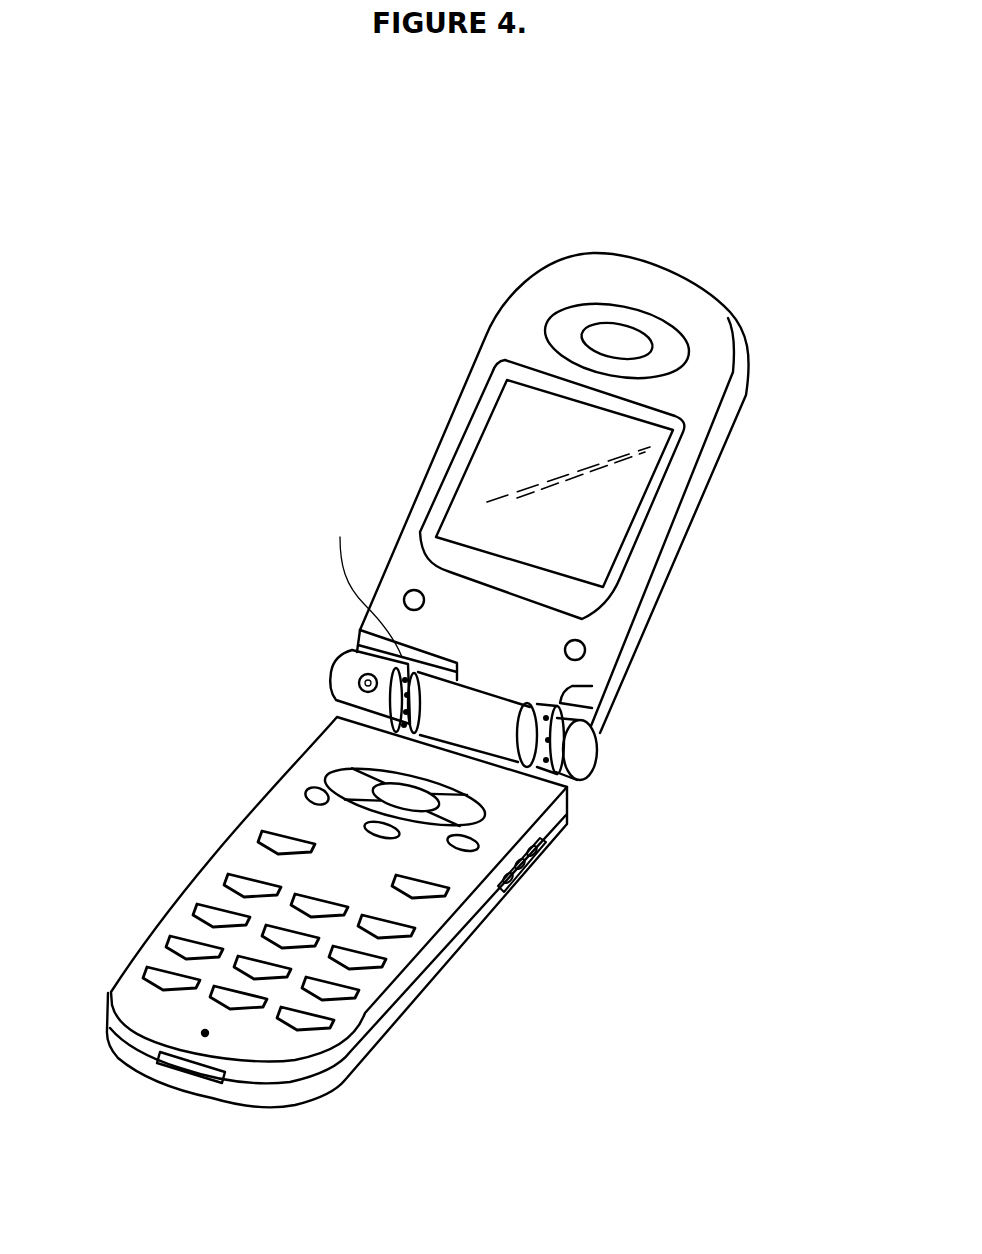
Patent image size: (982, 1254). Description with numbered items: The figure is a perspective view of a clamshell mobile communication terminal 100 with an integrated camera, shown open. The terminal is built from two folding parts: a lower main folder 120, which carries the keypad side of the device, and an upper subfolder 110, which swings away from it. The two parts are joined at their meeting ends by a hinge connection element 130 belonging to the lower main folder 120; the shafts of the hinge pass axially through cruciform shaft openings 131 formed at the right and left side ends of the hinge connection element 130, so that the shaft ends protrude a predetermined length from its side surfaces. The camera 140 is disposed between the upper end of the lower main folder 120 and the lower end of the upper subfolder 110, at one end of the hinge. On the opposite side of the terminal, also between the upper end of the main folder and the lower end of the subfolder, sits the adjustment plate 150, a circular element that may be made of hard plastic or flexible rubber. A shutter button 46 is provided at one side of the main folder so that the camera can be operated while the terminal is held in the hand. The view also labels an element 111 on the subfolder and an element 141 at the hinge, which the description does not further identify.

The mobile communication terminal 100 is at (427, 323).
The upper subfolder 110 is at (700, 328).
The display 111 is at (613, 497).
The lower main folder 120 is at (450, 970).
The hinge connection element 130 is at (501, 732).
The shaft openings 131 is at (563, 693).
The camera 140 is at (347, 688).
The hinge pin / hole 141 is at (362, 678).
The adjustment plate 150 is at (587, 750).
The shutter button 46 is at (547, 850).